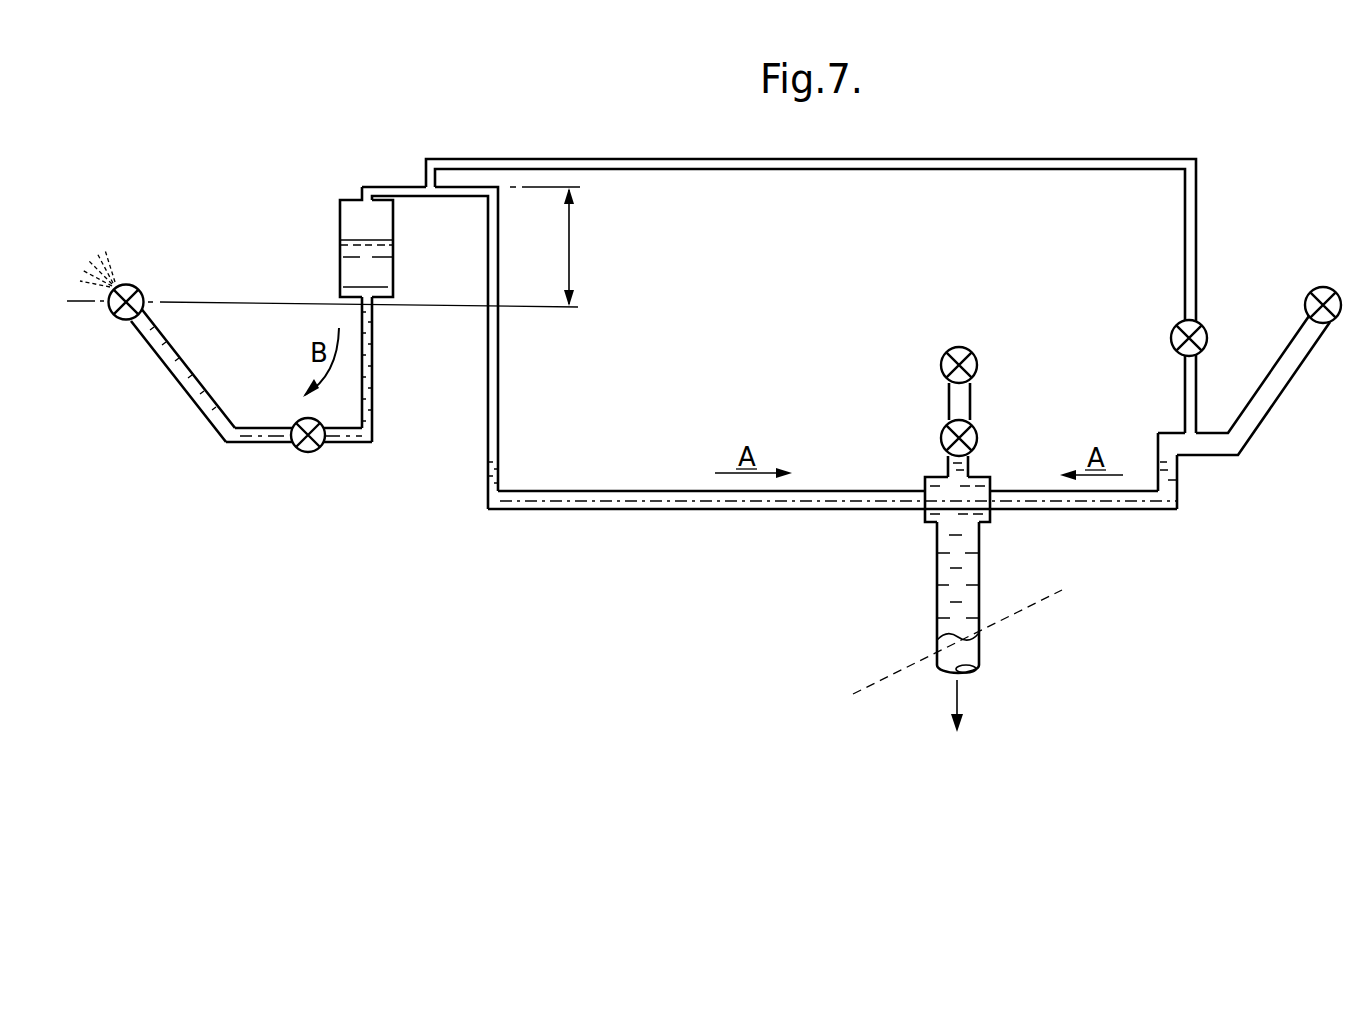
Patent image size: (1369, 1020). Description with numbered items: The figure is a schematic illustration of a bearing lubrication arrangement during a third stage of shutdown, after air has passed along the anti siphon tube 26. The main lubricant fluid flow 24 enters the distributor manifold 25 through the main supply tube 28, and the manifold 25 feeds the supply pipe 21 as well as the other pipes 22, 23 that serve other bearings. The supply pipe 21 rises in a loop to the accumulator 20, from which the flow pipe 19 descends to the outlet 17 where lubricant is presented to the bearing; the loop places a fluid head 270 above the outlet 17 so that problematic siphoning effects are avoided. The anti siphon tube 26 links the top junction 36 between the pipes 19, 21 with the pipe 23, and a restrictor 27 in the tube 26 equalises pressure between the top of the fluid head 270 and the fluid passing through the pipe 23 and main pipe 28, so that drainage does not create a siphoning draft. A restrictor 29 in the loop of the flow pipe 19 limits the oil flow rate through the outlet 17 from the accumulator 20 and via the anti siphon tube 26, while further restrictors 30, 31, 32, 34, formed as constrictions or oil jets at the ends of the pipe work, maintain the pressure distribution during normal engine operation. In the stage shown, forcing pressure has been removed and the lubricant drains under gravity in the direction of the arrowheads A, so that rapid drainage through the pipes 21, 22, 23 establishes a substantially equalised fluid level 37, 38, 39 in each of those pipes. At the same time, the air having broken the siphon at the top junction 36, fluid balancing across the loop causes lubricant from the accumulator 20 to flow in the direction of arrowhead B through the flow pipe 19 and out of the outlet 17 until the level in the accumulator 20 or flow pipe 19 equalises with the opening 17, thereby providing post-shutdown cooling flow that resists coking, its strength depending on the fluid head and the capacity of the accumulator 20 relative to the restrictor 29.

The outlet 17 is at (140, 320).
The flow pipe 19 is at (207, 414).
The accumulator 20 is at (340, 243).
The supply pipe 21 is at (503, 413).
The pipe 22 is at (953, 398).
The pipe 23 is at (1255, 412).
The main lubricant fluid flow 24 is at (958, 692).
The distributor manifold 25 is at (923, 512).
The anti siphon tube 26 is at (796, 158).
The restrictor 27 is at (1204, 328).
The main supply tube 28 is at (977, 553).
The restrictor 29 is at (308, 452).
The restrictor 30 is at (128, 284).
The restrictor 31 is at (958, 347).
The restrictor 32 is at (942, 437).
The restrictor 34 is at (1328, 288).
The top junction 36 is at (428, 185).
The fluid level 37 is at (497, 465).
The fluid level 38 is at (967, 458).
The fluid level 39 is at (1167, 462).
The fluid head 270 is at (598, 247).